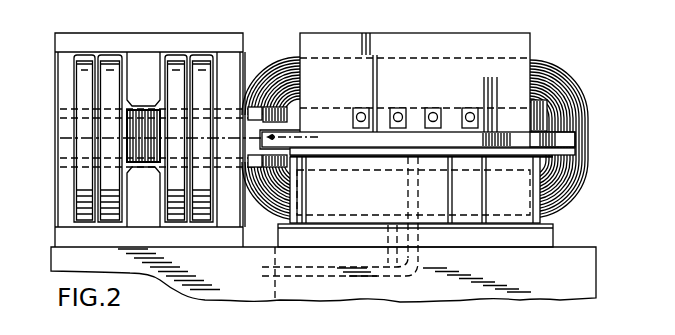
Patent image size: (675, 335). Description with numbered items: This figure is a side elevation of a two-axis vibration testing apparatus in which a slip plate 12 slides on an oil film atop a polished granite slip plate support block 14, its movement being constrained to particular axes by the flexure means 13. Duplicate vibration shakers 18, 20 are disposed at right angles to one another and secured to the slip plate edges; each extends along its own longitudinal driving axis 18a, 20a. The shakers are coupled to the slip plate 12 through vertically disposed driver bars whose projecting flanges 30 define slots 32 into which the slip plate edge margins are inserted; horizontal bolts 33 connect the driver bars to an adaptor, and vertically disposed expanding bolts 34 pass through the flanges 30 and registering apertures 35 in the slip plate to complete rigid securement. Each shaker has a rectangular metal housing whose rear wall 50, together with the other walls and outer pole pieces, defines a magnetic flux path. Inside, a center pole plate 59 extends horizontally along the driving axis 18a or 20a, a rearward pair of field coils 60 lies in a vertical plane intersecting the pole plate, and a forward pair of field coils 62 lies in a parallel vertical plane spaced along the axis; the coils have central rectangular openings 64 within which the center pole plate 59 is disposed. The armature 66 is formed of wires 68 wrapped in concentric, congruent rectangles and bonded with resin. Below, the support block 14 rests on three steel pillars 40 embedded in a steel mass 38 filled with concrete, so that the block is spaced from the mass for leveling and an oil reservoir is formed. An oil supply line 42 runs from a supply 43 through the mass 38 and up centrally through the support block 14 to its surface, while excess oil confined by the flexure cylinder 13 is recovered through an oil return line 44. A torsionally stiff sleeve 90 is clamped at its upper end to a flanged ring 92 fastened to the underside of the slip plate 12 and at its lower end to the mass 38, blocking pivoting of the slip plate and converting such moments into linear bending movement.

The slip plate 12 is at (571, 135).
The flexure means 13 is at (548, 196).
The slip plate support block 14 is at (443, 200).
The vibration shaker 18 is at (540, 33).
The driving axis 18a is at (418, 30).
The vibration shaker 20 is at (221, 27).
The driving axis 20a is at (47, 140).
The projecting flange 30 is at (290, 101).
The slot 32 is at (258, 146).
The bolt 33 is at (248, 107).
The expanding bolt 34 is at (278, 70).
The registering aperture 35 is at (310, 133).
The mass 38 is at (582, 254).
The steel pillar 40 is at (321, 233).
The oil supply line 42 is at (311, 277).
The oil supply 43 is at (243, 290).
The oil return line 44 is at (382, 261).
The rear wall 50 is at (55, 77).
The center pole plate 59 is at (72, 116).
The rearward field coils 60 is at (98, 111).
The forward field coils 62 is at (580, 55).
The central rectangular opening 64 is at (540, 109).
The armature 66 is at (142, 166).
The wires 68 is at (141, 111).
The sleeve 90 is at (578, 182).
The flanged ring 92 is at (548, 153).